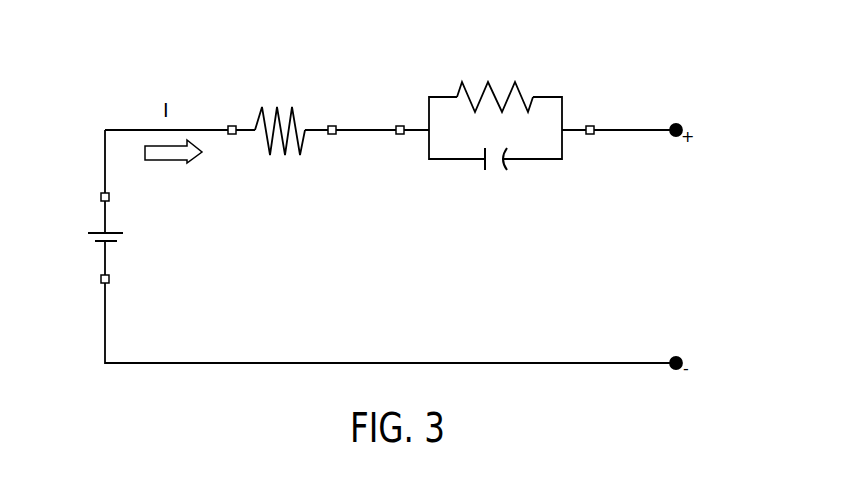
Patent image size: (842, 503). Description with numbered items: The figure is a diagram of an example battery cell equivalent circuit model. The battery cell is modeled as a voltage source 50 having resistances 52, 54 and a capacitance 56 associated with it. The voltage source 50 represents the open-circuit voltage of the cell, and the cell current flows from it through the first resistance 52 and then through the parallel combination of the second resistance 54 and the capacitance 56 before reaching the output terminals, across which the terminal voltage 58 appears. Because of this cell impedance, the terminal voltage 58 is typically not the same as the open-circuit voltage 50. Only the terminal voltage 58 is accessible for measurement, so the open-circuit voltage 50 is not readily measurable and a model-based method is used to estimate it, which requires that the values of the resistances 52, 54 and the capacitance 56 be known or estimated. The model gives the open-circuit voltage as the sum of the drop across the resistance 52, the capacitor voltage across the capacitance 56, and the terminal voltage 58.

The voltage source 50 is at (121, 232).
The resistance 52 is at (275, 107).
The resistance 54 is at (562, 58).
The capacitance 56 is at (483, 165).
The terminal voltage 58 is at (682, 240).